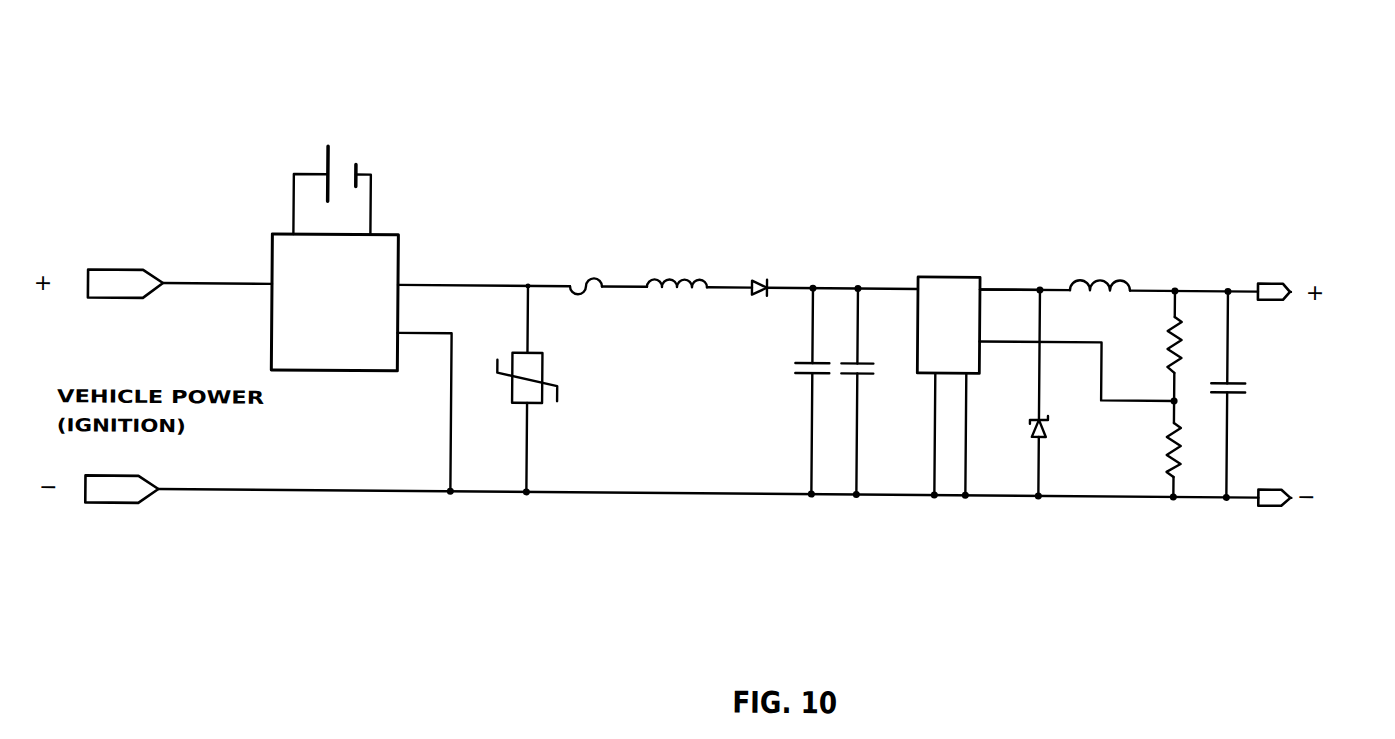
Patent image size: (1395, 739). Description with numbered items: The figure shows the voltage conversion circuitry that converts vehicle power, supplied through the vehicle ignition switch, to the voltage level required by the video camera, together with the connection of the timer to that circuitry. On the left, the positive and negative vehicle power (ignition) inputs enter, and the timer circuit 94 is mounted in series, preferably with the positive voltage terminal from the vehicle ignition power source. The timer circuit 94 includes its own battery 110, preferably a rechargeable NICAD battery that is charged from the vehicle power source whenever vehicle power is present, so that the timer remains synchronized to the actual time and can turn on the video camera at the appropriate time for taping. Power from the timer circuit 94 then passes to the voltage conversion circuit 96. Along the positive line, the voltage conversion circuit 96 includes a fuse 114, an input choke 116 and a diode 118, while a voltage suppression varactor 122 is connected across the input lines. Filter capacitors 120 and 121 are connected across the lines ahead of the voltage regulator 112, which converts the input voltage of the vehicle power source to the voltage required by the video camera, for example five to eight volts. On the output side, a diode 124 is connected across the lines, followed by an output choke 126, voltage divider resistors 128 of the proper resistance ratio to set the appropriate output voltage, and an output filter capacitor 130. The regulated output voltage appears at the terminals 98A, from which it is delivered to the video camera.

The timer circuit 94 is at (398, 255).
The voltage conversion circuit 96 is at (1030, 235).
The terminals 98A is at (1273, 279).
The battery 110 is at (338, 161).
The voltage regulator 112 is at (927, 271).
The fuse 114 is at (582, 278).
The input choke 116 is at (677, 276).
The diode 118 is at (762, 275).
The filter capacitor 120 is at (810, 443).
The filter capacitor 121 is at (862, 442).
The voltage suppression varactor 122 is at (548, 404).
The diode 124 is at (1024, 443).
The output choke 126 is at (1107, 280).
The voltage divider resistors 128 is at (1190, 357).
The output filter capacitor 130 is at (1252, 381).